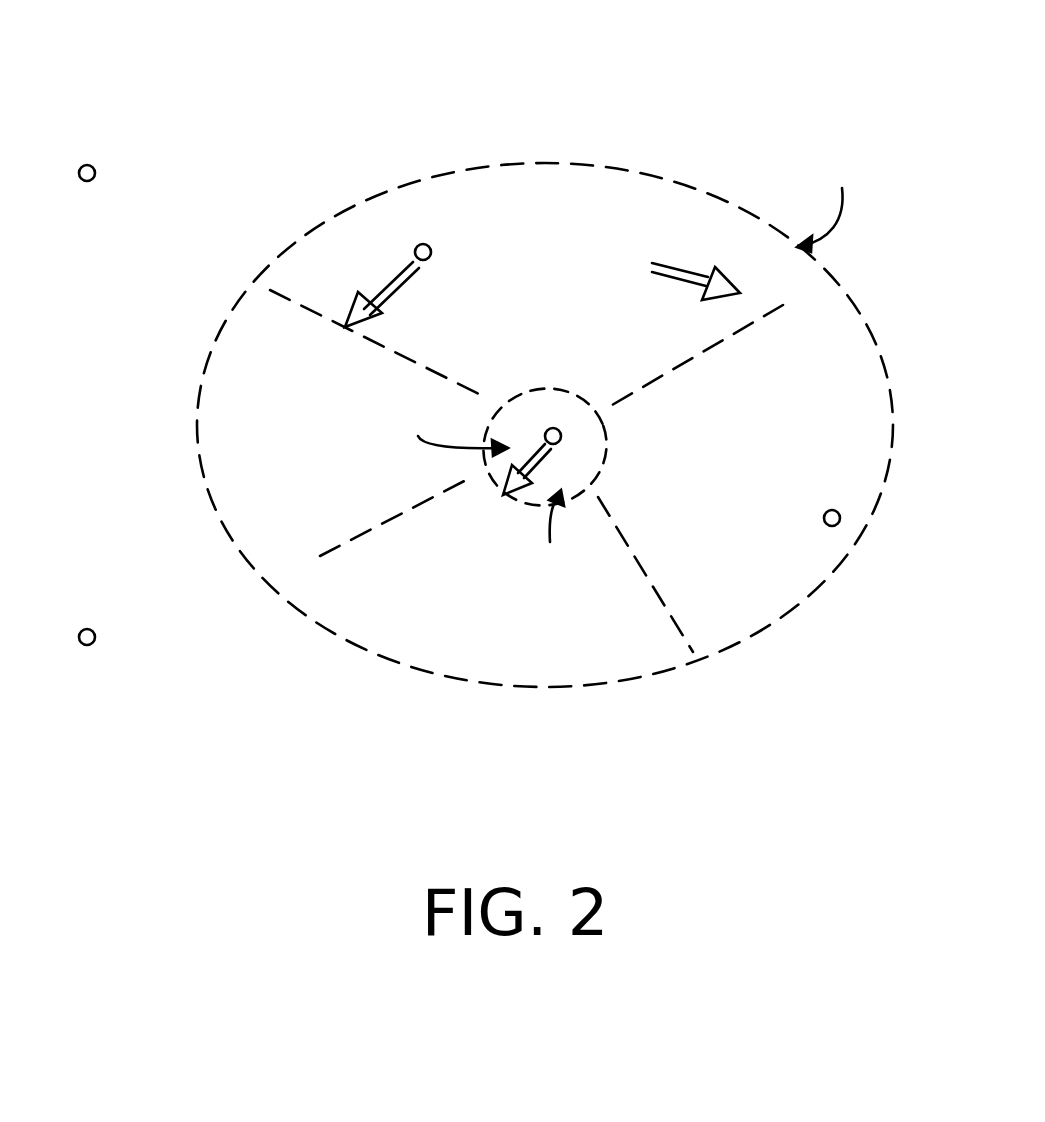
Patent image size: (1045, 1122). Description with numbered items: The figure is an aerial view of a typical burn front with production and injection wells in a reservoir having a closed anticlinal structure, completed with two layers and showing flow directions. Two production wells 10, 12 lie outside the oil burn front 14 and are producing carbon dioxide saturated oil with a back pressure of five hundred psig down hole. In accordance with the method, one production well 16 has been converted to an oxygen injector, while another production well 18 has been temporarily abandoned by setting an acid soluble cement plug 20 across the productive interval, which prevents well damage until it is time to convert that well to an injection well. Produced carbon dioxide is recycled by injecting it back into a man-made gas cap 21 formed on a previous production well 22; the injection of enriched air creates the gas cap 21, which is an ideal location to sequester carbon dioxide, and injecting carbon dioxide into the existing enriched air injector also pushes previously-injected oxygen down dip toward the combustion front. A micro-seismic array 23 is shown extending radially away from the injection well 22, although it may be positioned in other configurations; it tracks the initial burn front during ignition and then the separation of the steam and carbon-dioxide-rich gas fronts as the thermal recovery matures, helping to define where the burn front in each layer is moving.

The production well 10 is at (96, 176).
The production well 12 is at (96, 640).
The burn front 14 is at (395, 187).
The production well converted to oxygen injector 16 is at (430, 246).
The temporarily abandoned production well 18 is at (841, 511).
The acid soluble cement plug 20 is at (836, 526).
The man-made gas cap 21 is at (545, 433).
The previous production well 22 is at (561, 430).
The micro-seismic array 23 is at (295, 303).